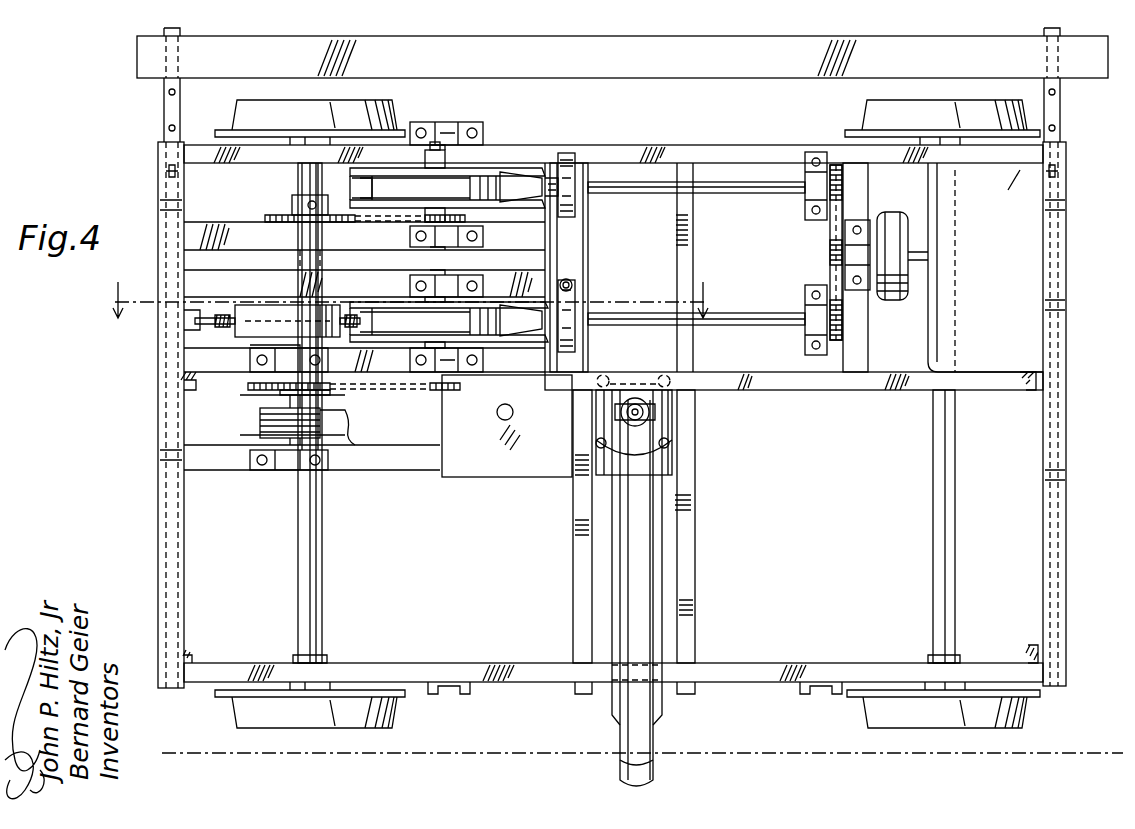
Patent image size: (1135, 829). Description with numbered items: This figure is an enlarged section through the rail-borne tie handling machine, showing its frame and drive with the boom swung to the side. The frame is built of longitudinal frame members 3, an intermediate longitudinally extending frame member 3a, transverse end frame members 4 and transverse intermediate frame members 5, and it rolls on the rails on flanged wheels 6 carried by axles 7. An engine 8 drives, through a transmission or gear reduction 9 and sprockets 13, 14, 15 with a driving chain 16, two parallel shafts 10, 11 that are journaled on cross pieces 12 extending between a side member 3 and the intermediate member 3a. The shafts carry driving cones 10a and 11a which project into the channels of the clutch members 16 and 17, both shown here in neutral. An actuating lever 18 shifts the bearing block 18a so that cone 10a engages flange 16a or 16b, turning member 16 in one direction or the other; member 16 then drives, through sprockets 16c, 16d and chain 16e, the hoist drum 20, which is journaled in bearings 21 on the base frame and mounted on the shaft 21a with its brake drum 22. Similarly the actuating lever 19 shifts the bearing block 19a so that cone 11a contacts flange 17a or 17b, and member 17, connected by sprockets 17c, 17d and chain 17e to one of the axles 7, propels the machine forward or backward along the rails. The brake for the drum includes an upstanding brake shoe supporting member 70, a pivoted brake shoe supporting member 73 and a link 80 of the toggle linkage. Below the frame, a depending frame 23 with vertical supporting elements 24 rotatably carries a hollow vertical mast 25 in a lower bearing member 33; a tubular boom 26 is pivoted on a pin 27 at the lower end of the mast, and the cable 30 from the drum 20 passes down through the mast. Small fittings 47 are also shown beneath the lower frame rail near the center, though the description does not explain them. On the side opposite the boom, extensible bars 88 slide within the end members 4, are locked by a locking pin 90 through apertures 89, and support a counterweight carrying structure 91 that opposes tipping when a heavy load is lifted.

The longitudinal frame members 3 is at (740, 150).
The intermediate longitudinally extending frame member 3a is at (790, 392).
The transverse end frame members 4 is at (158, 491).
The transverse intermediate frame members 5 is at (573, 532).
The flanged wheels 6 is at (390, 106).
The axles 7 is at (322, 530).
The engine 8 is at (1020, 240).
The transmission or gear reduction or fluid coupling 9 is at (898, 300).
The shaft 10 is at (722, 313).
The driving cone 10a is at (572, 283).
The shaft 11 is at (752, 193).
The driving cone 11a is at (540, 178).
The cross pieces 12 is at (570, 254).
The sprocket 13 is at (840, 256).
The sprocket 14 is at (843, 332).
The sprocket 15 is at (843, 182).
The driving chain or channeled clutch member 16 is at (408, 322).
The flange 16a is at (488, 335).
The flange 16b is at (522, 305).
The sprocket 16c is at (445, 392).
The sprocket 16d is at (250, 388).
The chain 16e is at (440, 386).
The channeled clutch member 17 is at (478, 170).
The flange 17a is at (366, 205).
The flange 17b is at (494, 170).
The sprocket 17c is at (466, 218).
The sprocket 17d is at (268, 215).
The chain 17e is at (365, 224).
The actuating lever 18 is at (575, 298).
The bearing block 18a is at (575, 344).
The actuating lever 19 is at (578, 172).
The bearing block 19a is at (575, 212).
The hoist drum 20 is at (262, 418).
The bearings 21 is at (328, 358).
The shaft 21a is at (262, 345).
The brake drum 22 is at (250, 305).
The depending frame 23 is at (665, 650).
The vertical supporting elements 24 is at (460, 695).
The hollow vertical mast 25 is at (604, 415).
The tubular boom 26 is at (653, 770).
The pivoting element or pin 27 is at (672, 412).
The cable 30 is at (349, 433).
The lower bearing member 33 is at (640, 445).
The clip 47 is at (578, 694).
The upstanding brake shoe supporting member 70 is at (209, 320).
The brake shoe supporting member 73 is at (245, 305).
The link 80 is at (363, 321).
The extensible bars 88 is at (166, 86).
The apertures 89 is at (165, 133).
The locking pin 90 is at (160, 177).
The counterweight carrying structure 91 is at (127, 56).